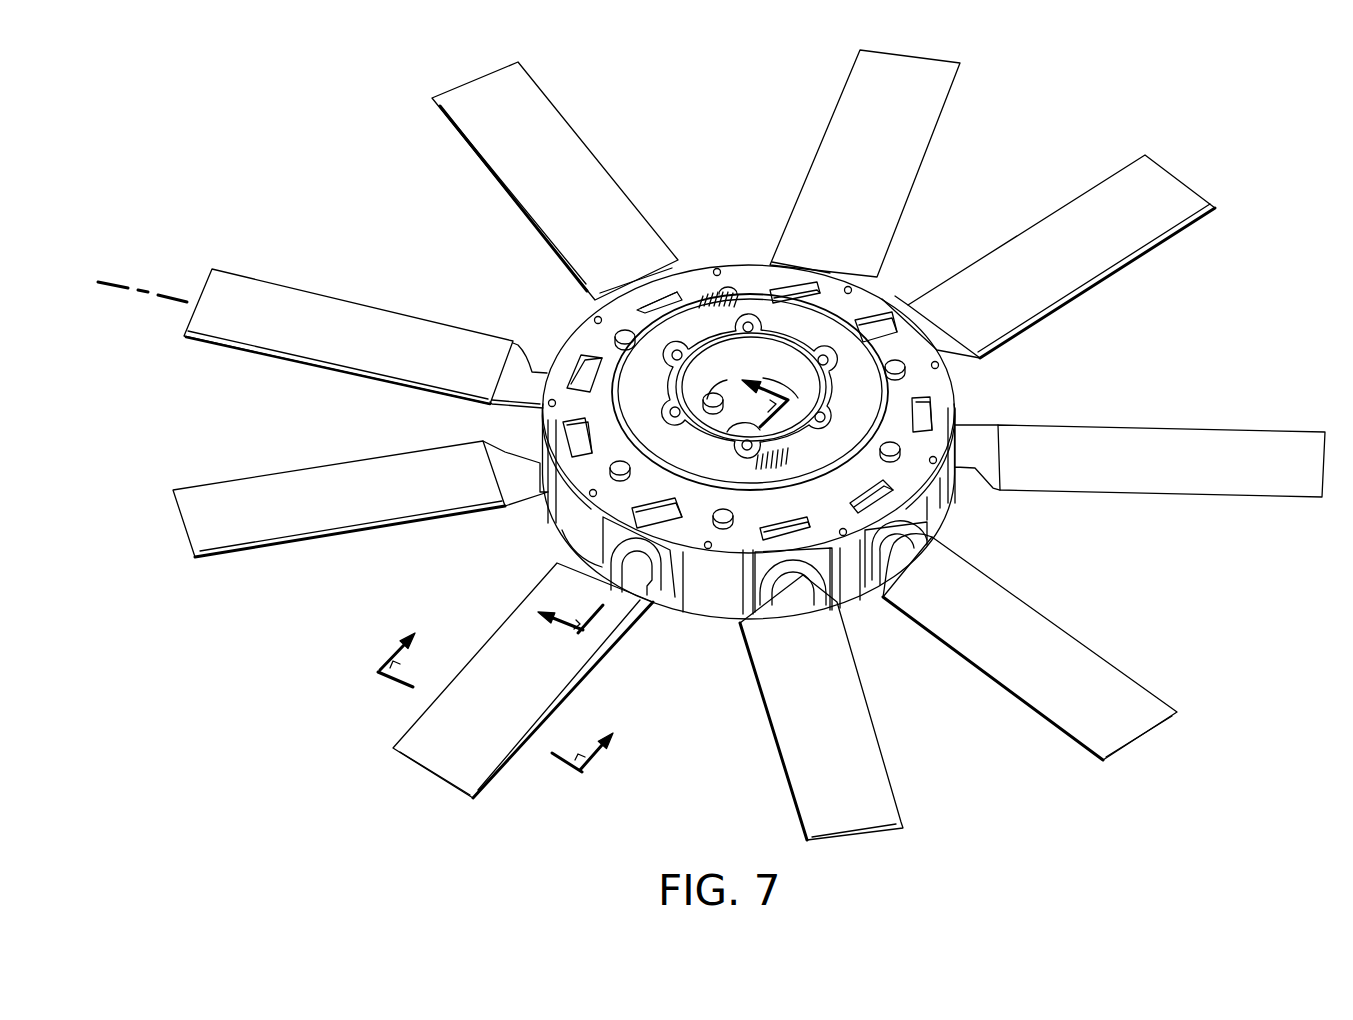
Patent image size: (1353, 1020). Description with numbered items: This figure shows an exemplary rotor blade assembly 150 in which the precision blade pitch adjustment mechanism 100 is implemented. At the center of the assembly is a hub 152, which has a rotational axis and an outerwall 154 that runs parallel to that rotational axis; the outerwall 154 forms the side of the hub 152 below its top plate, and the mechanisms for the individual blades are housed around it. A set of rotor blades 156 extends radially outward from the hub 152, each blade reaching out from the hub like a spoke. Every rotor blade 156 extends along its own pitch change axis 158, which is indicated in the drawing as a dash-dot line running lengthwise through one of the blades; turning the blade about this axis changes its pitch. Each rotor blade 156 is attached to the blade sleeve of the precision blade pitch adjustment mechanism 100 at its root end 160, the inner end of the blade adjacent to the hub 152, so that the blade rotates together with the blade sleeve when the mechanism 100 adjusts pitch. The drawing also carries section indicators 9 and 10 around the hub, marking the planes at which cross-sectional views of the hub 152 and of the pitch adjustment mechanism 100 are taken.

The rotor blade assembly 150 is at (334, 96).
The hub 152 is at (742, 272).
The outerwall 154 is at (938, 515).
The rotor blade 156 is at (283, 360).
The pitch change axis 158 is at (113, 286).
The root end 160 is at (535, 468).
The precision blade pitch adjustment mechanism 100 is at (868, 623).
The section line 9- 9 is at (653, 495).
The section line 10- 10 is at (515, 684).